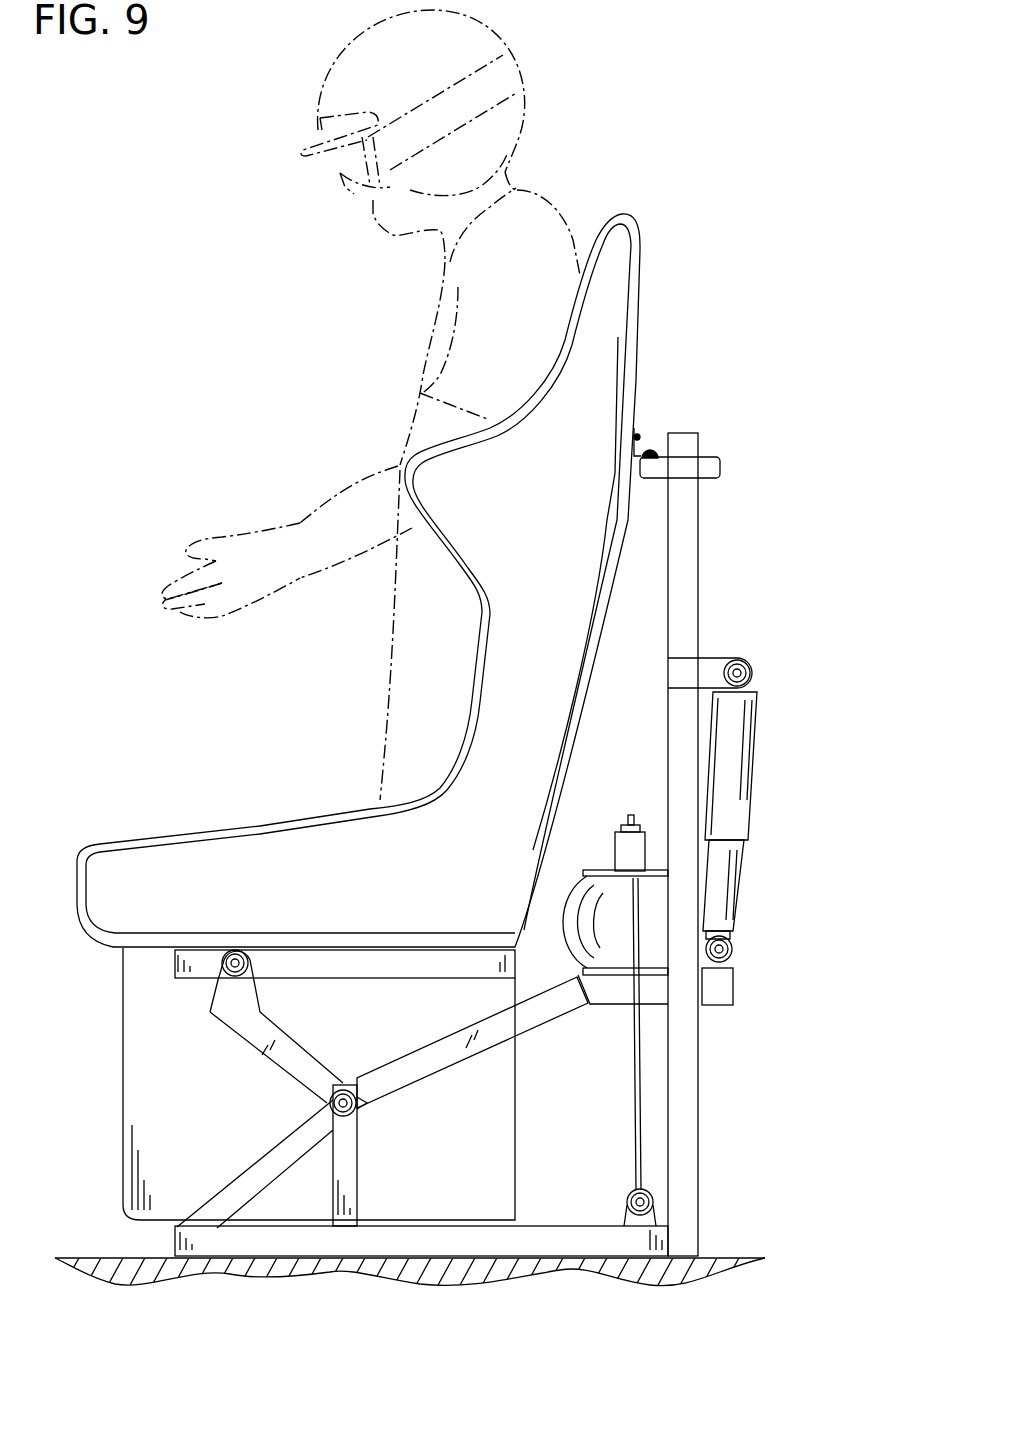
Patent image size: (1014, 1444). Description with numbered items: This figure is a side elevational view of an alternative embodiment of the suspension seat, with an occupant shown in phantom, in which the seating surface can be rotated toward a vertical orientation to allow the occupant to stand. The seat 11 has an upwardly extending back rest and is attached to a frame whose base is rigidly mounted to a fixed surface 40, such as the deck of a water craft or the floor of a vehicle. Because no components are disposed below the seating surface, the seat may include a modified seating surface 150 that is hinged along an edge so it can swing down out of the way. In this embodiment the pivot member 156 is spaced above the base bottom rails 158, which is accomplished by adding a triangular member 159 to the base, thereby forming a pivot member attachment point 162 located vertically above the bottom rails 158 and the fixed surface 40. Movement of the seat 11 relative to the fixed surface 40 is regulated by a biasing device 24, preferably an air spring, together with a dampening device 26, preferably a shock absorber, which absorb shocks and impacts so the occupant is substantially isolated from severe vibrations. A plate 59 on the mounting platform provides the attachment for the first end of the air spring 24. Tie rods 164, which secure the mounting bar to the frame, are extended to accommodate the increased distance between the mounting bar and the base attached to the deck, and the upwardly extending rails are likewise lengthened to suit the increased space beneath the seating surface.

The seat 11 is at (608, 338).
The biasing device 24 is at (580, 852).
The dampening device 26 is at (740, 728).
The fixed surface 40 is at (735, 1258).
The plate 59 is at (637, 848).
The modified seating surface 150 is at (123, 1030).
The pivot member 156 is at (548, 1012).
The base bottom rails 158 is at (648, 1240).
The triangular member 159 is at (250, 1183).
The pivot member attachment point 162 is at (330, 1103).
The tie rods 164 is at (638, 918).